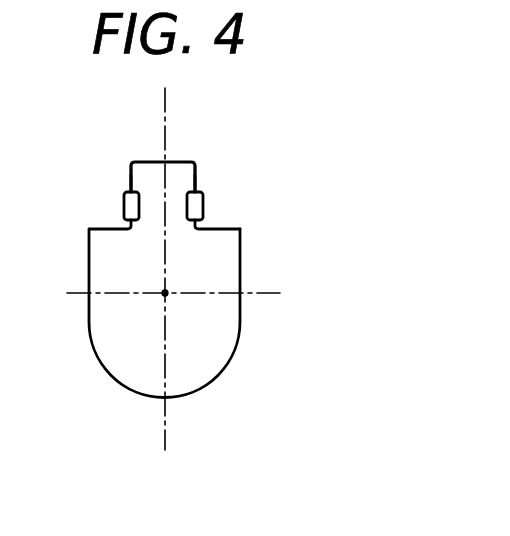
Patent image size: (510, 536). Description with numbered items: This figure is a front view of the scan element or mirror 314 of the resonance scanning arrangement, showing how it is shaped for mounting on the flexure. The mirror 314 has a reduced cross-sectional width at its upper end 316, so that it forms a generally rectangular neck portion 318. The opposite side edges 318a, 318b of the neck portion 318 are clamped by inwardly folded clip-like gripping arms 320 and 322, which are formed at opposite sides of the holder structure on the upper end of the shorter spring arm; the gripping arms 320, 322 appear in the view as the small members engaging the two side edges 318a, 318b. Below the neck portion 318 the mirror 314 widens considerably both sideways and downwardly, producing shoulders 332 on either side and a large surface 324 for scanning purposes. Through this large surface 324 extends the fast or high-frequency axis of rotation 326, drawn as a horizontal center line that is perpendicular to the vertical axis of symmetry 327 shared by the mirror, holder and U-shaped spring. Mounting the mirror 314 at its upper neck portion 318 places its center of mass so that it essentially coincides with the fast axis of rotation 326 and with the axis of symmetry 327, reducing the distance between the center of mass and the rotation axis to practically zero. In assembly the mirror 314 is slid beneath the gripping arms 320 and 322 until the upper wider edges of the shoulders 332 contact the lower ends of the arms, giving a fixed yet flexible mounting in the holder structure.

The scan element or mirror 314 is at (233, 270).
The upper end 316 is at (178, 161).
The neck portion 318 is at (196, 187).
The side edge 318a is at (131, 175).
The side edge 318b is at (195, 178).
The gripping arm 320 is at (123, 207).
The gripping arm 322 is at (204, 207).
The large surface 324 is at (223, 349).
The fast or high-frequency axis of rotation 326 is at (165, 293).
The axis of symmetry 327 is at (166, 124).
The shoulders 332 is at (223, 226).